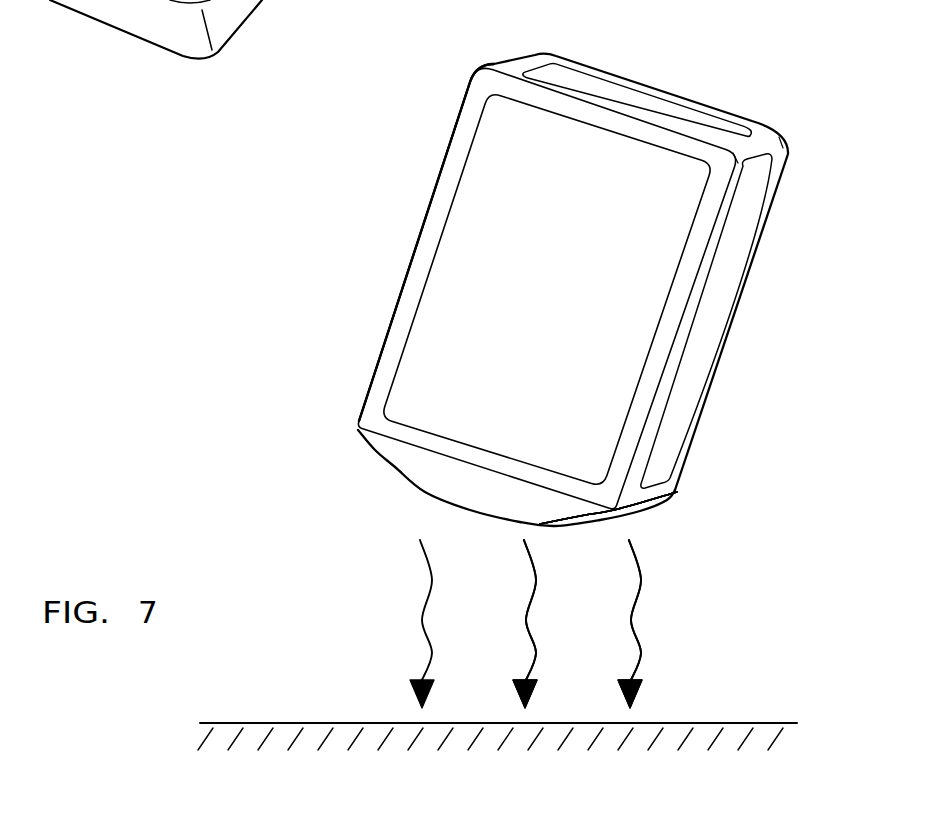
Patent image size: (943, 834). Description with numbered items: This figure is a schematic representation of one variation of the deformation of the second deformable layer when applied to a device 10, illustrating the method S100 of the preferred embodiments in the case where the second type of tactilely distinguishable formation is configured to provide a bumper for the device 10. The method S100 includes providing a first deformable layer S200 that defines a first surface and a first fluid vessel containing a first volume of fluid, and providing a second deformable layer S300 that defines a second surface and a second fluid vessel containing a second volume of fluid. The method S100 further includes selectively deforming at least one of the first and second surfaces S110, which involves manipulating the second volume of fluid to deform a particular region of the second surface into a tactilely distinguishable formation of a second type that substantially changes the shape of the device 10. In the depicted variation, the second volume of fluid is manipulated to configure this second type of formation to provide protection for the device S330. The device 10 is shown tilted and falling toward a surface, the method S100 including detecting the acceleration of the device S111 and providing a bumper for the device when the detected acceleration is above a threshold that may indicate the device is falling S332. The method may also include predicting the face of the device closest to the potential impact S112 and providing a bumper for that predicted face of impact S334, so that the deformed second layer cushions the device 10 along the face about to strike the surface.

The device 10 is at (465, 93).
The method S100 is at (291, 469).
The step of selectively deforming at least one of the first and second surfaces S110 is at (462, 624).
The step of detecting the acceleration of the device S111 is at (462, 624).
The step of predicting the face of the device closest to the potential impact S112 is at (410, 624).
The step of providing a first deformable layer S200 is at (411, 321).
The step of providing a second deformable layer S300 is at (706, 121).
The step of configuring the second type of tactilely distinguishable formation to pr S330 is at (643, 556).
The step of providing a bumper for the device when the acceleration is detected to b S332 is at (643, 575).
The step of providing a bumper for the predicted face of impact S334 is at (643, 592).